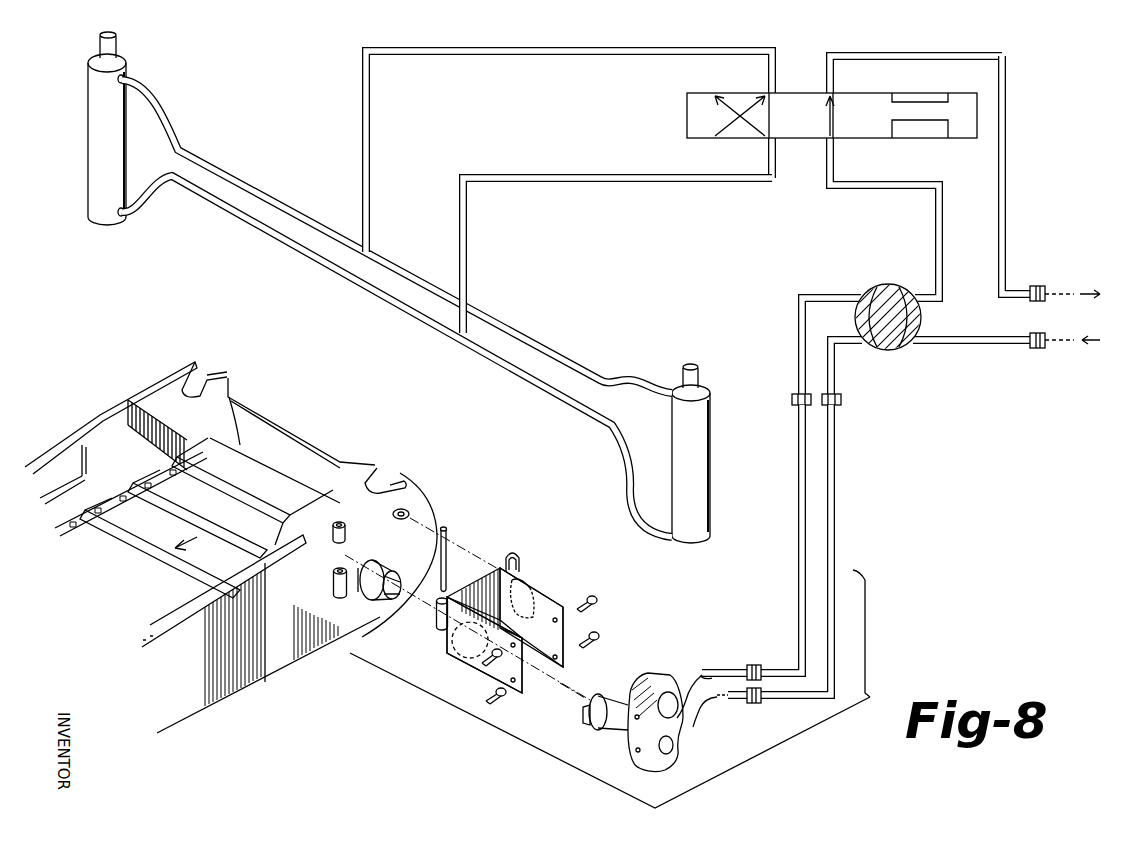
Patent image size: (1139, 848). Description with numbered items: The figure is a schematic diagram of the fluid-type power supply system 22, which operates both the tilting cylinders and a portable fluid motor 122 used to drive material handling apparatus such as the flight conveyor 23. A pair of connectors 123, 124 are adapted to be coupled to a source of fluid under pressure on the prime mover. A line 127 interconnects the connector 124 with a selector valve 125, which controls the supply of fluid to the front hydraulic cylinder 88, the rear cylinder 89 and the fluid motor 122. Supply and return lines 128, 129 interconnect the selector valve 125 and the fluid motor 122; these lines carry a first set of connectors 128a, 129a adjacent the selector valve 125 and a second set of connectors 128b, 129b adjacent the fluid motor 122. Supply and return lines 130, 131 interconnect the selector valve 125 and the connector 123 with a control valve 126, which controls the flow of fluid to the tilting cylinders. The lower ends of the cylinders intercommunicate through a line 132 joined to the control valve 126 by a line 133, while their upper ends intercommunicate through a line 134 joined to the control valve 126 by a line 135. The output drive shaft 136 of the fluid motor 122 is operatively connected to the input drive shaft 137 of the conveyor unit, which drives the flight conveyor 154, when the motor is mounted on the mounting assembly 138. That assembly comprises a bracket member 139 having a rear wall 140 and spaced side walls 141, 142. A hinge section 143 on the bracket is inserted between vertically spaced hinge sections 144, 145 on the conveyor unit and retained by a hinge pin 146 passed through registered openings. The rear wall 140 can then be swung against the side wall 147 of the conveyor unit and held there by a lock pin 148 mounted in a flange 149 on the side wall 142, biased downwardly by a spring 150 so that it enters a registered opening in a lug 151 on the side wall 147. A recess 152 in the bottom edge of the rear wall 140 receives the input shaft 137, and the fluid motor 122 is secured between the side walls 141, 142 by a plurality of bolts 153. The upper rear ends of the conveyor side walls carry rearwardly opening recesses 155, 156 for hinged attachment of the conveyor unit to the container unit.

The power supply system 22 is at (846, 465).
The flight conveyor 23 is at (161, 377).
The front hydraulic cylinder 88 is at (700, 472).
The rear cylinder 89 is at (88, 150).
The portable fluid motor 122 is at (653, 672).
The connector 123 is at (1013, 284).
The connector 124 is at (1033, 348).
The selector valve 125 is at (875, 288).
The control valve 126 is at (803, 140).
The line 127 is at (978, 346).
The supply line 128 is at (835, 520).
The connector 128a is at (840, 403).
The connector 128b is at (740, 700).
The return line 129 is at (798, 594).
The connector 129a is at (791, 399).
The connector 129b is at (755, 650).
The supply line 130 is at (942, 212).
The return line 131 is at (1006, 196).
The line 132 is at (405, 307).
The line 133 is at (610, 182).
The line 134 is at (523, 337).
The line 135 is at (548, 52).
The output drive shaft 136 is at (583, 733).
The input drive shaft 137 is at (380, 603).
The mounting assembly 138 is at (487, 698).
The bracket member 139 is at (553, 593).
The rear wall 140 is at (470, 573).
The side wall 141 is at (520, 676).
The side wall 142 is at (567, 659).
The hinge section 143 is at (437, 630).
The hinge section 144 is at (346, 533).
The hinge section 145 is at (333, 591).
The hinge pin 146 is at (447, 528).
The side wall 147 is at (320, 645).
The lock pin 148 is at (518, 556).
The flange 149 is at (530, 574).
The spring 150 is at (532, 610).
The lug 151 is at (422, 502).
The recess 152 is at (470, 675).
The bolts 153 is at (597, 598).
The flight conveyor 154 is at (160, 612).
The recess 155 is at (200, 382).
The recess 156 is at (400, 485).